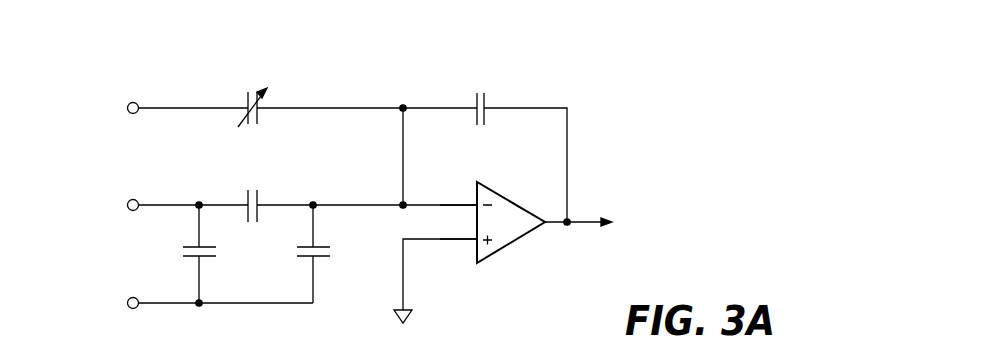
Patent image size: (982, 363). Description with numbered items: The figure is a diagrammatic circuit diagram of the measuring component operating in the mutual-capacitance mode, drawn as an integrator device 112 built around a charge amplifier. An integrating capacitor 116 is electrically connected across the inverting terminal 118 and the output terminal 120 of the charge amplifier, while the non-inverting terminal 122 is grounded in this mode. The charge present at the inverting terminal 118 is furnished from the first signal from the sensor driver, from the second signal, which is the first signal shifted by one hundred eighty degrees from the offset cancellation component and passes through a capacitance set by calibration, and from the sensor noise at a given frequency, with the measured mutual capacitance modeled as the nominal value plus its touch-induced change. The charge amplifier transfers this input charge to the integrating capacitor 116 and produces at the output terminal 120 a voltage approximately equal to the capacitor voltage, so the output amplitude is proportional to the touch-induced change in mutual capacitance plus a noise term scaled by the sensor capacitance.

The integrator device 112 is at (425, 172).
The integrating capacitor 116 is at (476, 103).
The inverting terminal 118 is at (477, 207).
The output terminal 120 is at (526, 242).
The non-inverting terminal 122 is at (477, 237).